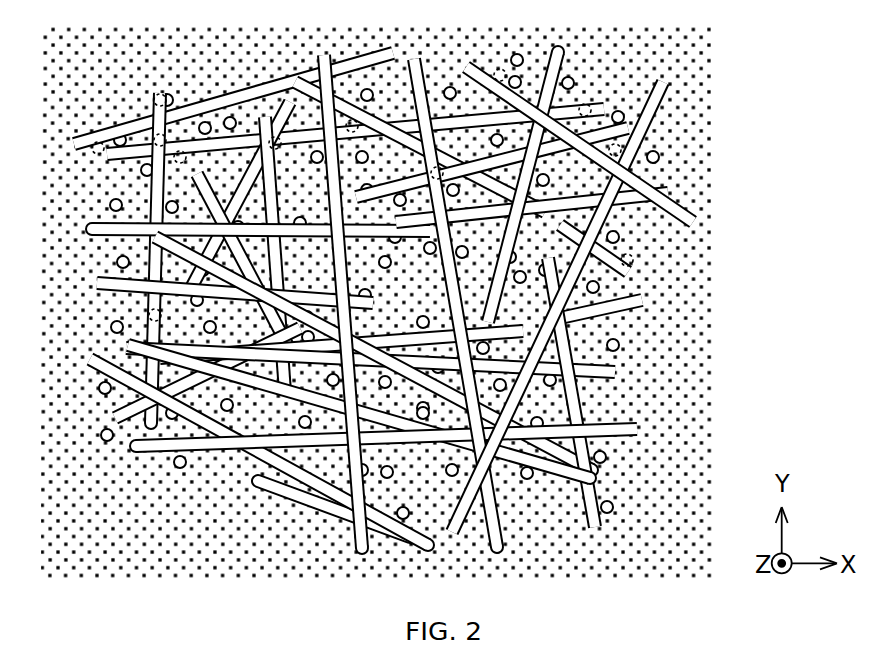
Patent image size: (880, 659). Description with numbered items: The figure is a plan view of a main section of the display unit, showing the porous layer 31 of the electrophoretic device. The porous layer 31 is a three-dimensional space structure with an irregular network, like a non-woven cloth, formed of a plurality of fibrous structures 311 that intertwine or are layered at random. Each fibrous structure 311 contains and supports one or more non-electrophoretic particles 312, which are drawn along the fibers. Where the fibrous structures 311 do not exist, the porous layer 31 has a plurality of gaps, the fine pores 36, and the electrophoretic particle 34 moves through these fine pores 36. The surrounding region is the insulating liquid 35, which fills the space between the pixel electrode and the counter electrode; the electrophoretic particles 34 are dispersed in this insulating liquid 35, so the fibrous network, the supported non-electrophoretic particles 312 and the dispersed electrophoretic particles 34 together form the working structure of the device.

The porous layer 31 is at (788, 224).
The fibrous structure 311 is at (620, 237).
The non-electrophoretic particle 312 is at (633, 262).
The electrophoretic particle 34 is at (626, 118).
The insulating liquid 35 is at (700, 64).
The fine pore 36 is at (578, 450).